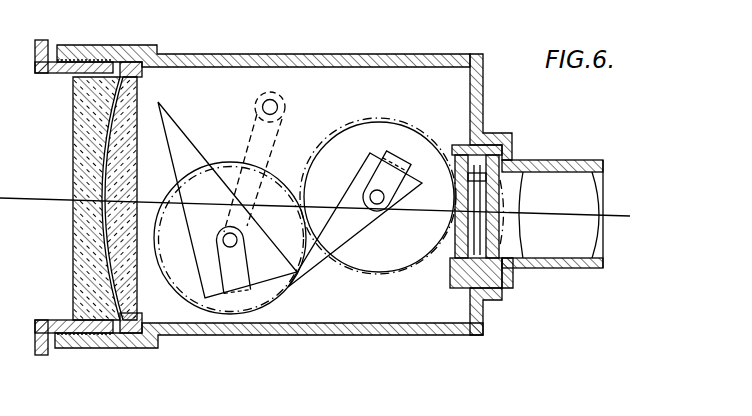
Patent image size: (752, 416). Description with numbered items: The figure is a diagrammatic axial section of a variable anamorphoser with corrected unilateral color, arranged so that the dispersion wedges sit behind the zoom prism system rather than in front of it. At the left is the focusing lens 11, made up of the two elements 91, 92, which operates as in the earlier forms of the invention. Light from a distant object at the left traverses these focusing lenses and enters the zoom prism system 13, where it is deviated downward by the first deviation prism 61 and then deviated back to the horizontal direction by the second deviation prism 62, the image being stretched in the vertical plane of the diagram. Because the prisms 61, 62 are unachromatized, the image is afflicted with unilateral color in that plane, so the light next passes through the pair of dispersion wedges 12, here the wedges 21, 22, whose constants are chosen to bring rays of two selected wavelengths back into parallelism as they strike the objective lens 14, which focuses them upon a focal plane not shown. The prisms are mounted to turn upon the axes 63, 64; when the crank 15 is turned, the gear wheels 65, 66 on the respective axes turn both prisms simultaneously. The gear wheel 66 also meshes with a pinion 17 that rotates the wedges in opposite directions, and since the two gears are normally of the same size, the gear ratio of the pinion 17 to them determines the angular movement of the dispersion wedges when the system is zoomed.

The focusing lens 11 is at (137, 357).
The pair of dispersion wedges 12 is at (502, 343).
The zoom prism system 13 is at (290, 336).
The objective lens 14 is at (542, 177).
The crank 15 is at (287, 103).
The pinion 17 is at (500, 178).
The dispersion wedge 21 is at (456, 246).
The dispersion wedge 22 is at (515, 268).
The deviation prism 61 is at (174, 126).
The deviation prism 62 is at (358, 173).
The axis 63 is at (228, 241).
The axis 64 is at (386, 200).
The gear wheel 65 is at (283, 292).
The gear wheel 66 is at (405, 270).
The focusing lens element 91 is at (80, 150).
The focusing lens element 92 is at (112, 218).